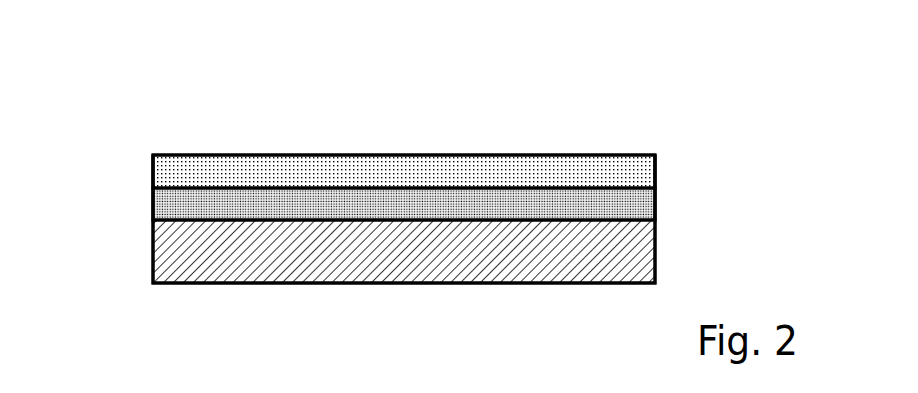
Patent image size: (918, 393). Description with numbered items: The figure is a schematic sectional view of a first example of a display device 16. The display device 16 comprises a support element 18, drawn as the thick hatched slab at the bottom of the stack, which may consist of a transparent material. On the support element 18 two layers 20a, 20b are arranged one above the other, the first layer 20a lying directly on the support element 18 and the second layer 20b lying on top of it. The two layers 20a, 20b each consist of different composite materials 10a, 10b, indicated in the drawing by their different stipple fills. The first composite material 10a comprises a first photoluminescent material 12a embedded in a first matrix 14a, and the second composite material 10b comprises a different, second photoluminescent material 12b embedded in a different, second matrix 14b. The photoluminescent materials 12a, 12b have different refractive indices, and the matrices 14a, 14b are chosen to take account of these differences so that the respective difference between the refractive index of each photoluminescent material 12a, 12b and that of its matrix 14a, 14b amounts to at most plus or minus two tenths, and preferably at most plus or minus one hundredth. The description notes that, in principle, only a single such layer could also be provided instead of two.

The display device 16 is at (656, 89).
The second photoluminescent material 12b is at (208, 163).
The second matrix 14b is at (301, 165).
The first photoluminescent material 12a is at (571, 203).
The first matrix 14a is at (473, 197).
The support element 18 is at (312, 263).
The second composite material 10b is at (142, 173).
The first composite material 10a is at (142, 210).
The second layer 20b is at (668, 167).
The first layer 20a is at (668, 208).